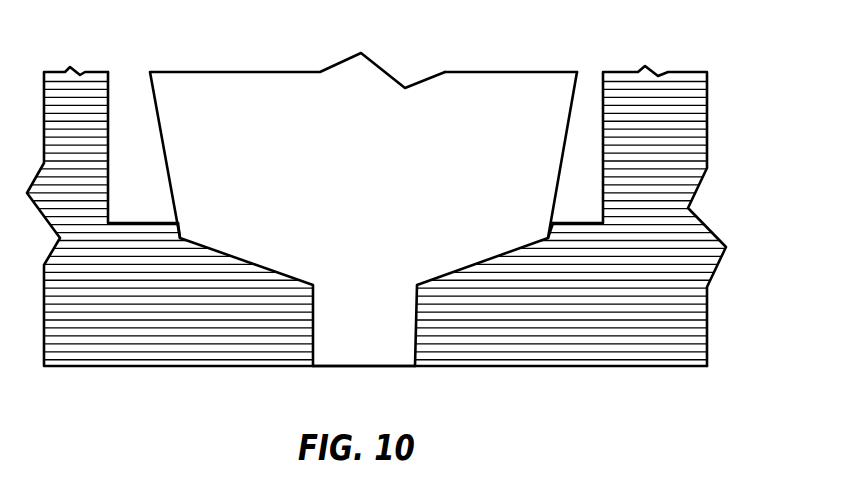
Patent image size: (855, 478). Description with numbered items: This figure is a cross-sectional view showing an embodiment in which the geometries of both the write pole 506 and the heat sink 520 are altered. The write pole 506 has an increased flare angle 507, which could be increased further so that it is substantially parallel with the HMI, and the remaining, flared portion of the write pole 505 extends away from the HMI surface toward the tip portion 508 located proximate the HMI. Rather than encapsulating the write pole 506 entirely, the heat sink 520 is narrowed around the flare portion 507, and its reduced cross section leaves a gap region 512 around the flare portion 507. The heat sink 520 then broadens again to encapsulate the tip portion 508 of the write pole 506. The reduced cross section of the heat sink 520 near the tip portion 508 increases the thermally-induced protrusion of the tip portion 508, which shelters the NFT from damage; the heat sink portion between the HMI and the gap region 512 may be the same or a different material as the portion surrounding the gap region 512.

The remaining portion of the write pole 505 is at (363, 145).
The write pole 506 is at (480, 72).
The flare angle 507 is at (236, 256).
The tip portion 508 is at (364, 351).
The gap region 512 is at (128, 82).
The heat sink 520 is at (690, 128).